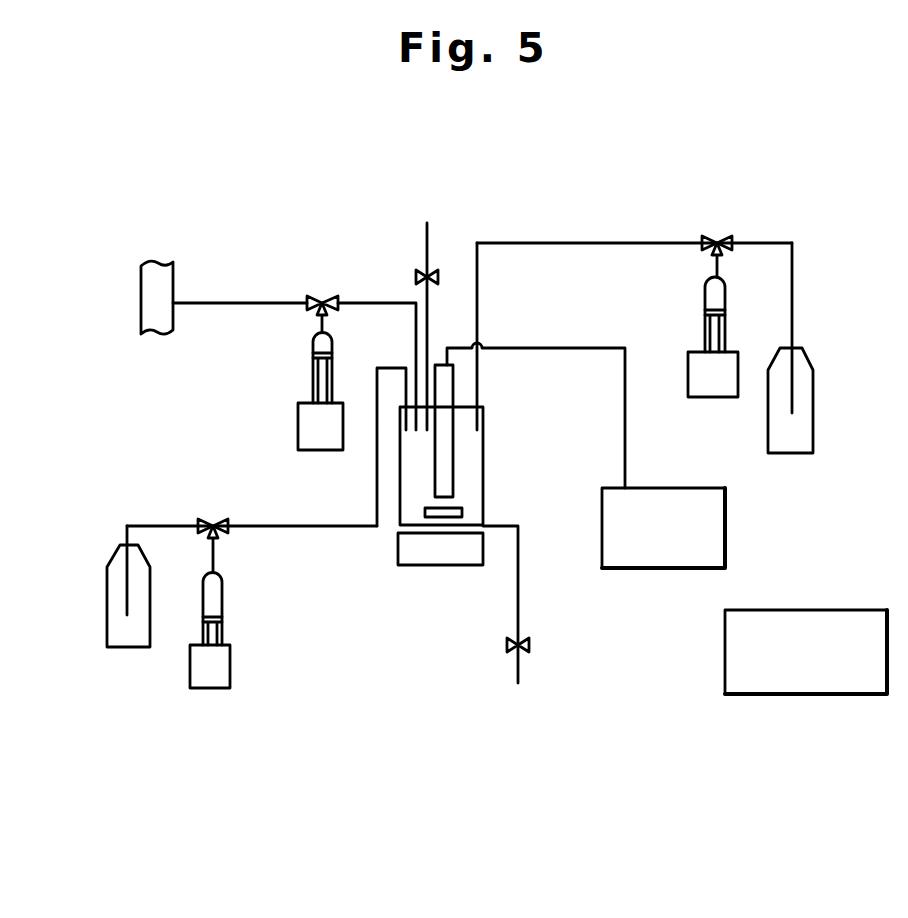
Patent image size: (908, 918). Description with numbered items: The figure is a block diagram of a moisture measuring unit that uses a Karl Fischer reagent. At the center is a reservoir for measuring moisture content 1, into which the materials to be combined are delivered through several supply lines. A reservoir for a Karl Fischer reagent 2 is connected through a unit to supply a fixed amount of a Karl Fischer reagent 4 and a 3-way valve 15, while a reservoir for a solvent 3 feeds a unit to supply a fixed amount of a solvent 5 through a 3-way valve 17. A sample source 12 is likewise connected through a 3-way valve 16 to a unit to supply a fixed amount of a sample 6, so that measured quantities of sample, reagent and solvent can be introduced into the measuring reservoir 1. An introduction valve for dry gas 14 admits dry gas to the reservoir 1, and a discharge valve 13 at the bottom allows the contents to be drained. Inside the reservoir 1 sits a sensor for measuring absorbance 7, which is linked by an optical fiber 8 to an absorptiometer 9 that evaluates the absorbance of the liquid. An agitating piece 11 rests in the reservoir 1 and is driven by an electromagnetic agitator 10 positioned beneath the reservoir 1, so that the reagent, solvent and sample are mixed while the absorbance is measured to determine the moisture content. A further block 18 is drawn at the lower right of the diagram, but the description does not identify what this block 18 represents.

The reservoir for measuring moisture content 1 is at (484, 428).
The reservoir for Karl Fischer reagent 2 is at (127, 648).
The reservoir for solvent 3 is at (813, 425).
The unit to supply a fixed amount of Karl Fischer reagent 4 is at (222, 598).
The unit to supply a fixed amount of solvent 5 is at (726, 290).
The unit to supply a fixed amount of sample 6 is at (298, 426).
The sensor for measuring absorbance 7 is at (453, 480).
The optical fiber 8 is at (596, 347).
The absorptiometer 9 is at (726, 530).
The electromagnetic agitator 10 is at (418, 566).
The agitating piece 11 is at (463, 512).
The sample source 12 is at (141, 268).
The discharge valve 13 is at (532, 645).
The introduction valve for dry gas 14 is at (440, 274).
The 3-way valve 15 is at (206, 520).
The 3-way valve 16 is at (320, 297).
The 3-way valve 17 is at (714, 238).
The recorder 18 is at (786, 694).